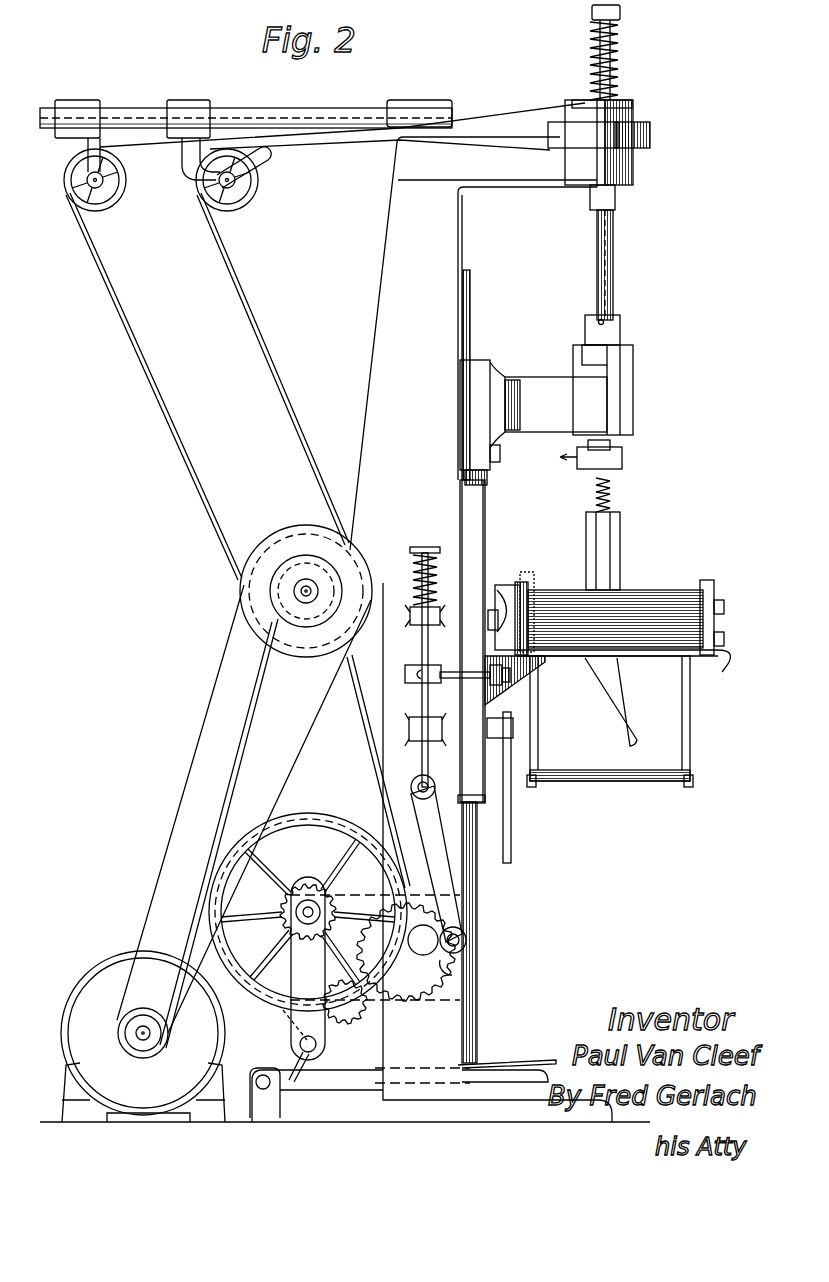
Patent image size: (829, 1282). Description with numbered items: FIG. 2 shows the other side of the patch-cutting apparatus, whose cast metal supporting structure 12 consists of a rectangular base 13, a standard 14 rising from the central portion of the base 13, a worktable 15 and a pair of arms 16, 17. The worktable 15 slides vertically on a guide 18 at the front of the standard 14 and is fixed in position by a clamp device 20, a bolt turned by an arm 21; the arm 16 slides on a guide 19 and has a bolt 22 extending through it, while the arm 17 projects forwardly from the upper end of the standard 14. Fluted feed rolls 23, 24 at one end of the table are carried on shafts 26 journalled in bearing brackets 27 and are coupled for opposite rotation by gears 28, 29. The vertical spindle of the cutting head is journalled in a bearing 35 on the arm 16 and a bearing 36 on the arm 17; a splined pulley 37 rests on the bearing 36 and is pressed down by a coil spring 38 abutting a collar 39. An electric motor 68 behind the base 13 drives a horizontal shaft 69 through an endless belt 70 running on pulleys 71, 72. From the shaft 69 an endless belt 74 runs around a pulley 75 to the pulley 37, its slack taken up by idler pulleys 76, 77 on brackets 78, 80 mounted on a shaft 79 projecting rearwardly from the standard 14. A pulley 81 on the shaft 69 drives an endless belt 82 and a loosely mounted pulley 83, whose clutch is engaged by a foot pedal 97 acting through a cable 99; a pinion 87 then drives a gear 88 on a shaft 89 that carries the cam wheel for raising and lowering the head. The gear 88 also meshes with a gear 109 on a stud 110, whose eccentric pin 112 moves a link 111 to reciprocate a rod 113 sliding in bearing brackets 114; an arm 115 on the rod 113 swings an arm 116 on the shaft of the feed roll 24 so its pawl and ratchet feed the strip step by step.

The supporting structure 12 is at (466, 251).
The base 13 is at (521, 1122).
The standard 14 is at (455, 526).
The worktable 15 is at (582, 711).
The arm 16 is at (524, 386).
The arm 17 is at (541, 172).
The guide 18 is at (473, 885).
The guide 19 is at (471, 319).
The clamp device 20 is at (514, 729).
The arm 21 is at (512, 755).
The bolt 22 is at (501, 453).
The feed roll 23 is at (670, 590).
The feed roll 24 is at (680, 658).
The shafts 26 is at (726, 604).
The bearing brackets 27 is at (714, 586).
The gear 28 is at (525, 580).
The gear 29 is at (500, 603).
The bearing 35 is at (612, 393).
The bearing 36 is at (630, 172).
The pulley 37 is at (622, 104).
The coil spring 38 is at (620, 52).
The collar 39 is at (622, 12).
The electric motor 68 is at (111, 966).
The shaft 69 is at (302, 587).
The endless belt 70 is at (203, 707).
The pulley 71 is at (150, 1018).
The pulley 72 is at (246, 608).
The endless belt 74 is at (152, 380).
The pulley 75 is at (240, 572).
The idler pulley 76 is at (255, 192).
The idler pulley 77 is at (65, 180).
The bracket 78 is at (204, 110).
The shaft 79 is at (329, 115).
The bracket 80 is at (88, 110).
The pulley 81 is at (305, 628).
The endless belt 82 is at (254, 728).
The pulley 83 is at (330, 820).
The pinion 87 is at (288, 910).
The gear 88 is at (366, 1004).
The shaft 89 is at (378, 1022).
The foot pedal 97 is at (511, 1066).
The cable 99 is at (286, 1066).
The gear 109 is at (452, 968).
The stud 110 is at (440, 952).
The link 111 is at (450, 912).
The eccentric pin 112 is at (462, 940).
The rod 113 is at (422, 703).
The bearing brackets 114 is at (409, 729).
The arm 115 is at (455, 668).
The arm 116 is at (512, 672).